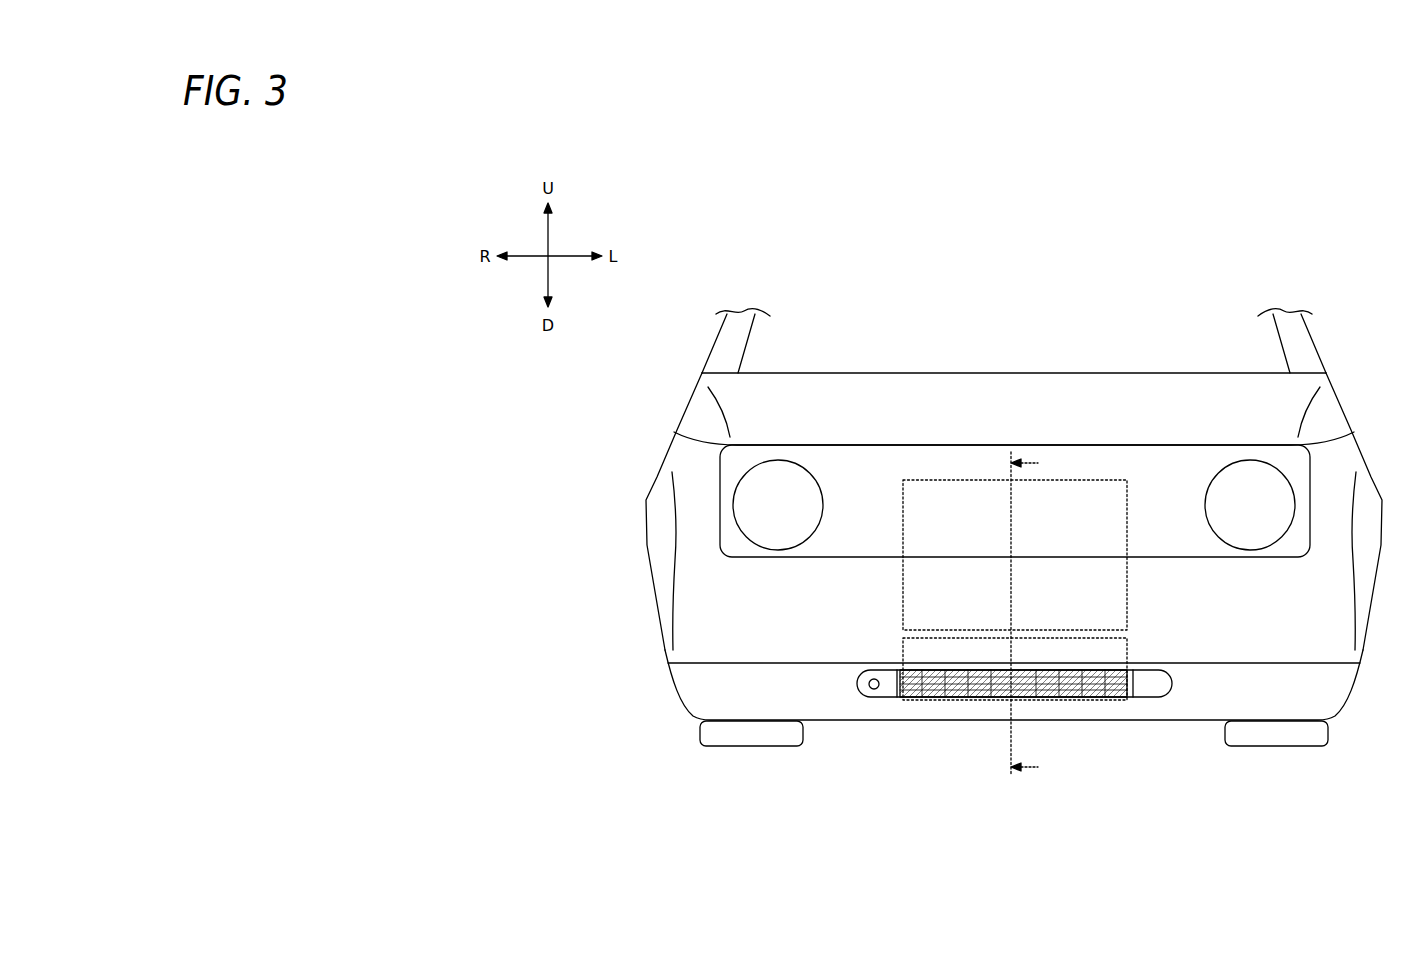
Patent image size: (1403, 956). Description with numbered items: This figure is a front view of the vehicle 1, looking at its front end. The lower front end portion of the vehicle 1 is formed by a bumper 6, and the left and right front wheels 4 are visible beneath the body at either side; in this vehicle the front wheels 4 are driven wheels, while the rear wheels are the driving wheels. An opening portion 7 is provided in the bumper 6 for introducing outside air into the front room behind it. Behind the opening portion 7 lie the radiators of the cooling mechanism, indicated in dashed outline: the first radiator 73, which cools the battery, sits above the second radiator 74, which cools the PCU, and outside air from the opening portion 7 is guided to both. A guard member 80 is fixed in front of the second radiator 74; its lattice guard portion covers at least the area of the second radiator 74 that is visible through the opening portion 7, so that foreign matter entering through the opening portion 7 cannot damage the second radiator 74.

The vehicle 1 is at (1194, 281).
The front wheels 4 is at (752, 734).
The bumper 6 is at (1253, 693).
The opening portion 7 is at (875, 689).
The first radiator 73 is at (1128, 520).
The second radiator 74 is at (1128, 647).
The guard member 80 is at (1062, 690).